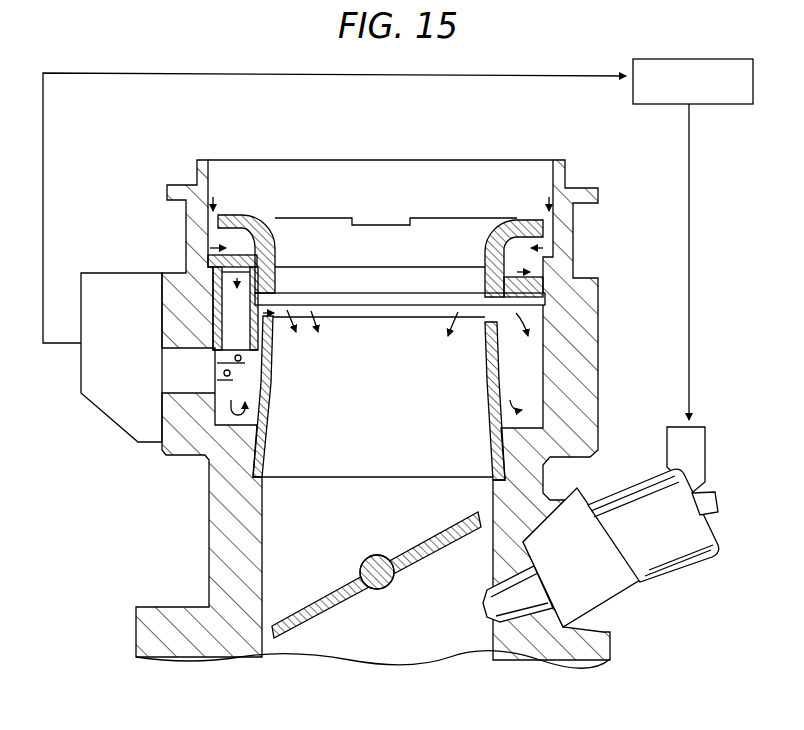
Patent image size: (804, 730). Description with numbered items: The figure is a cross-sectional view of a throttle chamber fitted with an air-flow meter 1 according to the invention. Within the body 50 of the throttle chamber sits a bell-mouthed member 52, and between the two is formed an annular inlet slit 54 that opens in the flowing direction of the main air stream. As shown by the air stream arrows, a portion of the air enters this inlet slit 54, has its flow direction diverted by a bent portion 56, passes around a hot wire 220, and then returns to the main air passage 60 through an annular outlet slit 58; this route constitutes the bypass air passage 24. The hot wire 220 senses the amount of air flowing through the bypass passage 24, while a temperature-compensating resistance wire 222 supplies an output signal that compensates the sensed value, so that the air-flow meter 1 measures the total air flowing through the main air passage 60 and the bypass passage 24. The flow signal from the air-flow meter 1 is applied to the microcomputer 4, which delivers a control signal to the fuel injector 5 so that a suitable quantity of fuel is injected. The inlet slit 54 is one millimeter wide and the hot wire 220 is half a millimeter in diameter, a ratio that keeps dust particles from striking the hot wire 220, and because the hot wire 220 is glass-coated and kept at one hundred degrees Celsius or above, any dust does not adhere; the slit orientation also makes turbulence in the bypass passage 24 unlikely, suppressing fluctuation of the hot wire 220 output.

The air-flow meter 1 is at (115, 408).
The microcomputer 4 is at (665, 105).
The fuel injector 5 is at (665, 560).
The bypass air passage 24 is at (228, 323).
The body of the throttle chamber 50 is at (588, 332).
The bell-mouthed member 52 is at (257, 240).
The annular inlet slit 54 is at (215, 214).
The bent portion 56 is at (207, 257).
The annular outlet slit 58 is at (288, 306).
The main air passage 60 is at (354, 470).
The hot wire 220 is at (243, 360).
The temperature-compensating resistance wire 222 is at (232, 378).